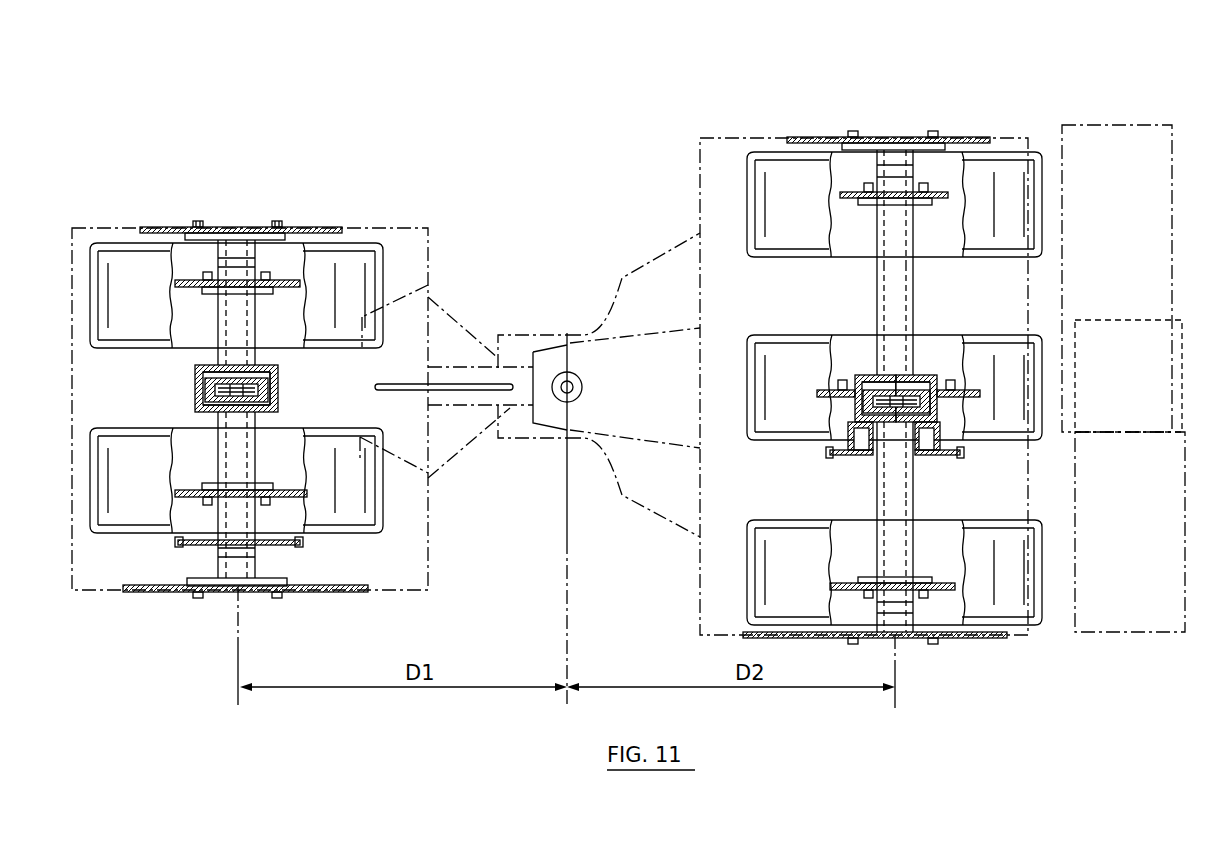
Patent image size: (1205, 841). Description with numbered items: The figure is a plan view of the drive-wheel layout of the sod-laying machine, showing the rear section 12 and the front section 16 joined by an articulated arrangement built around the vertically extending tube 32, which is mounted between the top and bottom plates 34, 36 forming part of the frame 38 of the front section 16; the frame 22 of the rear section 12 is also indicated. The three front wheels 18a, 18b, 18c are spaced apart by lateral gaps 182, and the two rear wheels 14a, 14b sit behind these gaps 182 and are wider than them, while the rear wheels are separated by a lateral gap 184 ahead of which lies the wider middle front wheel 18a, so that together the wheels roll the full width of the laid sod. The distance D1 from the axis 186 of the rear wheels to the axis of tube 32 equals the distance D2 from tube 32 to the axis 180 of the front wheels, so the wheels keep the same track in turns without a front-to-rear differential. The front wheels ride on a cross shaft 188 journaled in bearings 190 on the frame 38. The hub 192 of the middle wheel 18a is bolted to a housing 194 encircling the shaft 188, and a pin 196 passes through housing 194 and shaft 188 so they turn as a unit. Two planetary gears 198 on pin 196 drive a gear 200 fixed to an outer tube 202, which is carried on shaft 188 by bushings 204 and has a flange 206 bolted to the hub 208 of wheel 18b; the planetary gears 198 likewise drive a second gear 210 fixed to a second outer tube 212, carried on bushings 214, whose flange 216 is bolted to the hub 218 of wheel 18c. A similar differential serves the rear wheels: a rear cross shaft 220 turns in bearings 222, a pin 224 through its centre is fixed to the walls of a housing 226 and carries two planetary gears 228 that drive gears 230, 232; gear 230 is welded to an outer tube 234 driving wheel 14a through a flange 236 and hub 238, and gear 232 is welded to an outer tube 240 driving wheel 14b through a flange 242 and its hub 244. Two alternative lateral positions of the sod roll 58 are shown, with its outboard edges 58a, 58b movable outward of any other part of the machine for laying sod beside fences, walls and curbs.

The rear section 12 is at (272, 160).
The rear wheel 14a is at (384, 520).
The rear wheel 14b is at (380, 291).
The front section 16 is at (857, 96).
The middle front wheel 18a is at (748, 386).
The outer front wheel 18b is at (748, 545).
The outer front wheel 18c is at (748, 190).
The frame 22 is at (398, 384).
The vertically extending tube 32 is at (582, 381).
The top plate 34 is at (672, 484).
The bottom plate 36 is at (672, 309).
The frame 38 is at (816, 136).
The sod roll 58 is at (1173, 292).
The outboard edge of sod roll 58a is at (1110, 125).
The outboard edge of sod roll 58b is at (1128, 634).
The axis of the front wheels 180 is at (897, 672).
The lateral gaps 182 is at (810, 309).
The lateral gap 184 is at (125, 399).
The axis of the rear wheels 186 is at (238, 648).
The cross shaft 188 is at (928, 148).
The bearings 190 is at (897, 389).
The hub 192 is at (828, 396).
The housing 194 is at (859, 378).
The pin 196 is at (922, 386).
The planetary gears 198 is at (856, 412).
The gear 200 is at (886, 440).
The outer tube 202 is at (916, 480).
The bushings 204 is at (876, 493).
The flange 206 is at (868, 572).
The hub 208 is at (840, 590).
The second gear 210 is at (886, 350).
The second outer tube 212 is at (916, 310).
The bushings 214 is at (919, 213).
The flange 216 is at (862, 205).
The hub 218 is at (836, 214).
The rear cross shaft 220 is at (236, 247).
The bearings 222 is at (253, 263).
The pin 224 is at (270, 366).
The housing 226 is at (196, 390).
The planetary gears 228 is at (278, 392).
The gear 230 is at (270, 412).
The gear 232 is at (216, 364).
The outer tube 234 is at (257, 446).
The flange 236 is at (266, 490).
The hub 238 is at (281, 498).
The outer tube 240 is at (219, 298).
The flange 242 is at (257, 298).
The flange 244 is at (176, 300).